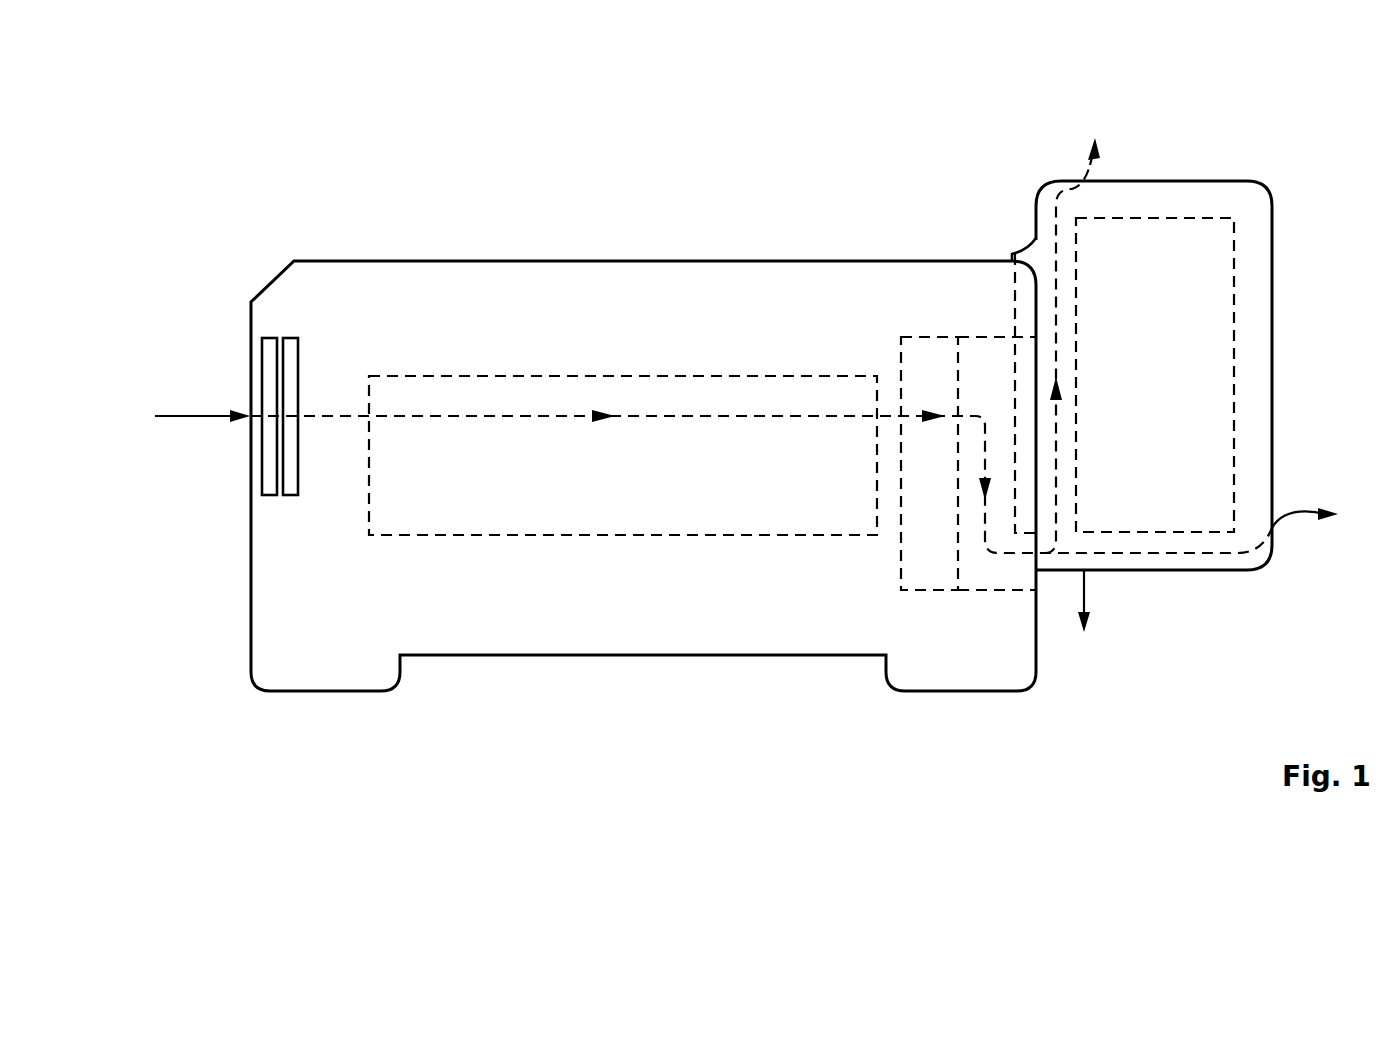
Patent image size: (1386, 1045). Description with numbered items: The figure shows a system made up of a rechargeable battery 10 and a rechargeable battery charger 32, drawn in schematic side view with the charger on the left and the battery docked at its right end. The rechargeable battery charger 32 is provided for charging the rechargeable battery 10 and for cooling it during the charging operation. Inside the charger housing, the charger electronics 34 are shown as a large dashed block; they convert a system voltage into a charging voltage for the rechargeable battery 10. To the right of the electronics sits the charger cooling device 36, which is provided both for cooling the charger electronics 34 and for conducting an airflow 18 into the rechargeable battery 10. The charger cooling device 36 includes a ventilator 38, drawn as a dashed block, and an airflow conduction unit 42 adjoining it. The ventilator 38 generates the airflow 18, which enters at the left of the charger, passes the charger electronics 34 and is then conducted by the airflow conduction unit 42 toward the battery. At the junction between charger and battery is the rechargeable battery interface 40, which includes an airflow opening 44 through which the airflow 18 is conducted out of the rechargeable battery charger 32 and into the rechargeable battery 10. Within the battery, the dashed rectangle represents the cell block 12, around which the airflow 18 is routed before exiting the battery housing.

The rechargeable battery 10 is at (1261, 152).
The cell block 12 is at (1153, 218).
The airflow 18 is at (525, 416).
The rechargeable battery charger 32 is at (250, 186).
The charger electronics 34 is at (441, 376).
The charger cooling device 36 is at (943, 264).
The ventilator 38 is at (921, 337).
The rechargeable battery interface 40 is at (1016, 208).
The airflow conduction unit 42 is at (985, 337).
The airflow opening 44 is at (1022, 574).